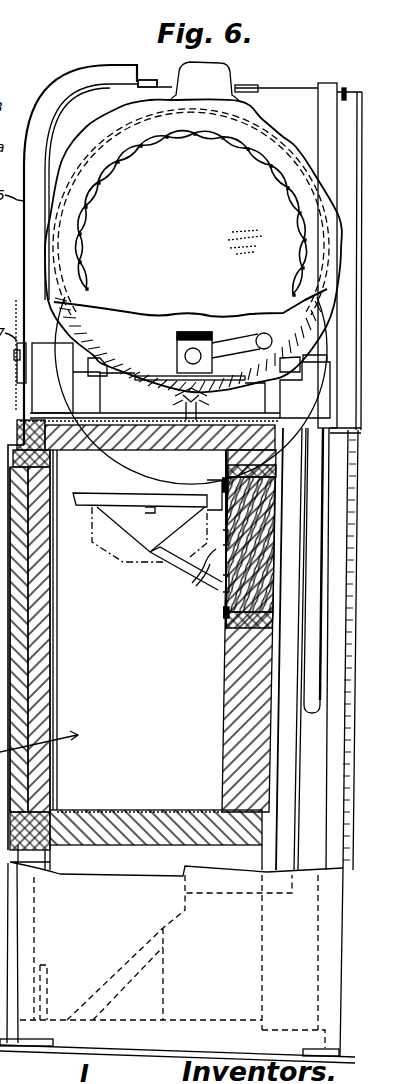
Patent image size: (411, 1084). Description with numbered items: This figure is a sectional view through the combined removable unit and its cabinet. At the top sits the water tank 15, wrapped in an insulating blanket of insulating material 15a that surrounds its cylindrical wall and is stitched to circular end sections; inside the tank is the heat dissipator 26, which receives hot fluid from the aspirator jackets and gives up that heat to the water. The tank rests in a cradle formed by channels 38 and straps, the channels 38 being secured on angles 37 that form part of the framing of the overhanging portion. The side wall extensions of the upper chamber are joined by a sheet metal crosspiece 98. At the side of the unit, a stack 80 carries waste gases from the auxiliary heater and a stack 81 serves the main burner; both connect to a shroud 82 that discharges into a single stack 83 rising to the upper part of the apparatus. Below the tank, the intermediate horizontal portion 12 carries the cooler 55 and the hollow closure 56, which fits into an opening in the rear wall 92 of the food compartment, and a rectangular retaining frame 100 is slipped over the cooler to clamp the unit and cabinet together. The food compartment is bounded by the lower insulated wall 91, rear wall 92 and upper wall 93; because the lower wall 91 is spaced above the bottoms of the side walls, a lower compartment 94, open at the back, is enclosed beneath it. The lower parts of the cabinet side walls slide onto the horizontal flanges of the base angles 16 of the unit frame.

The intermediate horizontal portion 12 is at (130, 487).
The water tank 15 is at (93, 152).
The insulating material 15a is at (220, 234).
The base angles 16 is at (260, 1029).
The heat dissipator 26 is at (176, 345).
The angles 37 is at (268, 372).
The channels 38 is at (93, 362).
The cooler 55 is at (160, 496).
The closure 56 is at (206, 604).
The stack 80 is at (290, 649).
The stack 81 is at (314, 633).
The shroud 82 is at (305, 386).
The single stack 83 is at (325, 118).
The lower insulated wall 91 is at (156, 816).
The rear wall 92 is at (226, 723).
The upper wall 93 is at (134, 442).
The lower compartment 94 is at (176, 860).
The sheet metal crosspiece 98 is at (148, 88).
The retaining frame 100 is at (226, 623).